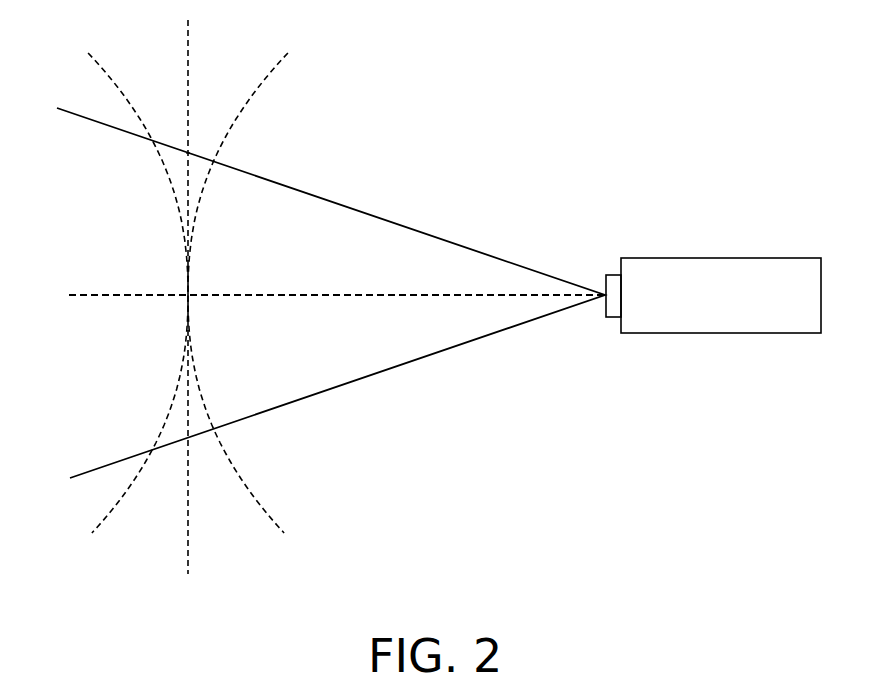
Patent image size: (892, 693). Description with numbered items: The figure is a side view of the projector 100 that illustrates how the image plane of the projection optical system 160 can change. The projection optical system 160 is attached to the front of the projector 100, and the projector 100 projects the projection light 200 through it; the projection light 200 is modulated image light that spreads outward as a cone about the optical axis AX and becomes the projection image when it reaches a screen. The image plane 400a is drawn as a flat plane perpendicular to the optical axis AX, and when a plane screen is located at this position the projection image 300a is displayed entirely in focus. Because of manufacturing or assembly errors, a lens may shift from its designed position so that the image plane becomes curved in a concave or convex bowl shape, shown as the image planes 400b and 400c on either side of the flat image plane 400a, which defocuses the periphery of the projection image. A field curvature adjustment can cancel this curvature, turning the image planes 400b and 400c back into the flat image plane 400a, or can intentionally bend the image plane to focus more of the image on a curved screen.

The projector 100 is at (656, 258).
The projection optical system 160 is at (611, 275).
The projection light 200 is at (455, 244).
The projection image 300a is at (188, 153).
The image plane 400a is at (188, 32).
The image plane 400b is at (250, 97).
The image plane 400c is at (108, 78).
The optical axis AX is at (101, 295).